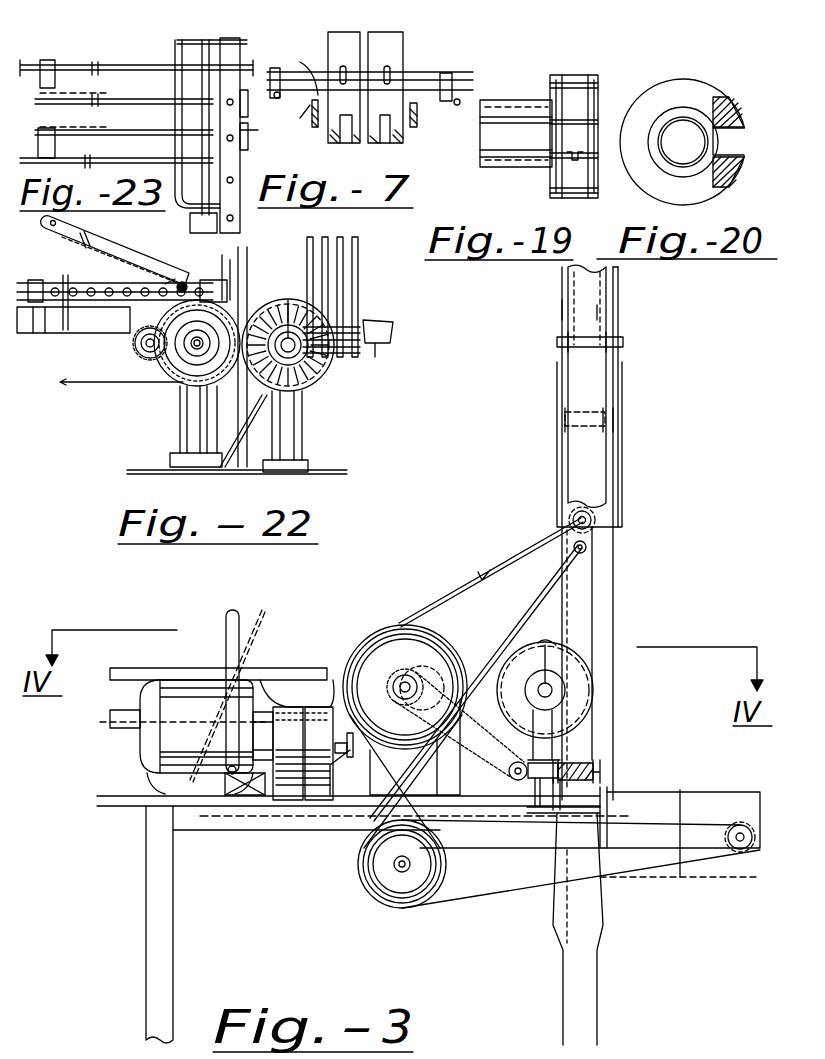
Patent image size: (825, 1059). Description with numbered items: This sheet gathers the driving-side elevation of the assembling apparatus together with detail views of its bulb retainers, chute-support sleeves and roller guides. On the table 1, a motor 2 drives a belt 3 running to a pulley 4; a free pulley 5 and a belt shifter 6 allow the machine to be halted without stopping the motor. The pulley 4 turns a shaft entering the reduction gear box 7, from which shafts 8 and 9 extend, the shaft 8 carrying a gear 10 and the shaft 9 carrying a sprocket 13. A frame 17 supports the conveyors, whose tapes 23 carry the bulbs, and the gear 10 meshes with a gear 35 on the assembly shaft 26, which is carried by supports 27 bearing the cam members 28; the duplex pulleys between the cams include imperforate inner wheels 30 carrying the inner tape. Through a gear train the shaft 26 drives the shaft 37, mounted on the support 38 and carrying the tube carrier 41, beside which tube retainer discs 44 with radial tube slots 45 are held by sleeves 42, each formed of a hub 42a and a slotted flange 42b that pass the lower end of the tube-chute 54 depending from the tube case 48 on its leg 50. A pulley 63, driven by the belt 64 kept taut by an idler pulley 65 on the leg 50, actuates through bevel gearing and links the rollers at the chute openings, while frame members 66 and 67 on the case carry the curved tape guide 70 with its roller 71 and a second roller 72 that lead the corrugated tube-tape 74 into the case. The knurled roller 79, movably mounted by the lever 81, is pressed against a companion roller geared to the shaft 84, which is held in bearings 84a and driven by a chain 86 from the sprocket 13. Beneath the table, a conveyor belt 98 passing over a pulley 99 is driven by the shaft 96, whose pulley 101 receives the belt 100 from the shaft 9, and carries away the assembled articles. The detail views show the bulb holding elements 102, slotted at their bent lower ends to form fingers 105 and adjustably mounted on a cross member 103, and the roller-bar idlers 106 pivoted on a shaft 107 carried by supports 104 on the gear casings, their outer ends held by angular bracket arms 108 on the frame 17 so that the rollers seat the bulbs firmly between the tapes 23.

In FIG. 3, the table 1 is at (113, 806).
In FIG. 3, the motor 2 is at (147, 757).
In FIG. 3, the belt 3 is at (315, 705).
In FIG. 3, the pulley 4 is at (282, 675).
In FIG. 3, the free pulley 5 is at (242, 672).
In FIG. 3, the belt shifter 6 is at (207, 807).
In FIG. 3, the reduction gear box 7 is at (377, 833).
In FIG. 22, the shaft 8 is at (143, 347).
In FIG. 3, the shaft 9 is at (398, 668).
In FIG. 22, the gear 10 is at (147, 367).
In FIG. 3, the sprocket 13 is at (377, 628).
In FIG. 23, the frame 17 is at (243, 167).
In FIG. 7, the frame 17 is at (436, 165).
In FIG. 22, the frame 17 is at (100, 328).
In FIG. 3, the frame 17 is at (130, 677).
In FIG. 22, the belt or tape 23 is at (80, 385).
In FIG. 22, the shaft 26 is at (197, 373).
In FIG. 22, the supports 27 is at (200, 441).
In FIG. 3, the cam members 28 is at (467, 650).
In FIG. 22, the inner wheel 30 is at (252, 405).
In FIG. 22, the gear 35 is at (157, 362).
In FIG. 22, the shaft 37 is at (292, 325).
In FIG. 3, the shaft 37 is at (547, 668).
In FIG. 22, the support 38 is at (300, 393).
In FIG. 22, the tube carrier 41 is at (323, 377).
In FIG. 3, the tube carrier 41 is at (540, 640).
In FIG. 19, the sleeve 42 is at (492, 168).
In FIG. 20, the sleeve 42 is at (717, 82).
In FIG. 19, the hub 42a is at (517, 99).
In FIG. 20, the hub 42a is at (738, 178).
In FIG. 19, the flange 42b is at (610, 70).
In FIG. 20, the flange 42b is at (752, 112).
In FIG. 22, the tube retainer discs 44 is at (337, 357).
In FIG. 3, the tube retainer discs 44 is at (593, 697).
In FIG. 3, the tube slot 45 is at (600, 707).
In FIG. 3, the tube case 48 is at (622, 388).
In FIG. 3, the leg 50 is at (590, 618).
In FIG. 22, the tube-chute 54 is at (358, 291).
In FIG. 3, the tube-chute 54 is at (603, 590).
In FIG. 3, the pulley 63 is at (592, 513).
In FIG. 3, the belt 64 is at (540, 548).
In FIG. 3, the idler pulley 65 is at (590, 543).
In FIG. 3, the frame member 66 is at (618, 288).
In FIG. 3, the frame member 67 is at (563, 308).
In FIG. 3, the curved tape guide 70 is at (597, 313).
In FIG. 3, the roller 71 is at (603, 428).
In FIG. 3, the roller 72 is at (567, 340).
In FIG. 3, the corrugated tube-tape 74 is at (567, 270).
In FIG. 3, the knurled roller 79 is at (603, 850).
In FIG. 3, the lever 81 is at (633, 866).
In FIG. 3, the shaft 84 is at (497, 780).
In FIG. 3, the supporting bearings 84a is at (530, 793).
In FIG. 3, the chain 86 is at (413, 677).
In FIG. 3, the shaft 96 is at (402, 872).
In FIG. 3, the conveyor belt 98 is at (730, 853).
In FIG. 3, the pulley 99 is at (740, 770).
In FIG. 3, the belt 100 is at (450, 860).
In FIG. 3, the pulley 101 is at (373, 890).
In FIG. 23, the bulb holding elements 102 is at (244, 118).
In FIG. 7, the bulb holding elements 102 is at (355, 51).
In FIG. 22, the bulb holding elements 102 is at (240, 283).
In FIG. 23, the cross member 103 is at (207, 88).
In FIG. 7, the cross member 103 is at (312, 80).
In FIG. 22, the cross member 103 is at (220, 287).
In FIG. 7, the supports 104 is at (318, 66).
In FIG. 22, the supports 104 is at (136, 262).
In FIG. 7, the fingers 105 is at (385, 150).
In FIG. 23, the roller-bar idler 106 is at (168, 100).
In FIG. 22, the roller-bar idler 106 is at (88, 252).
In FIG. 23, the shaft 107 is at (150, 68).
In FIG. 7, the shaft 107 is at (413, 127).
In FIG. 22, the shaft 107 is at (175, 300).
In FIG. 23, the angular bracket arms 108 is at (33, 97).